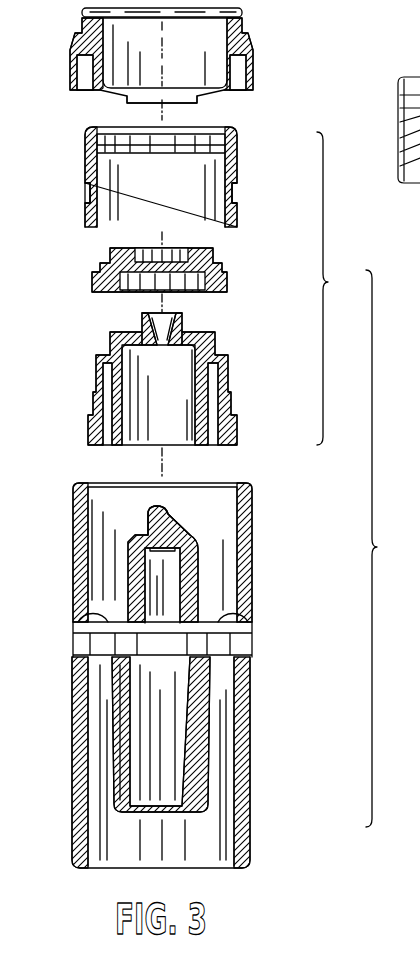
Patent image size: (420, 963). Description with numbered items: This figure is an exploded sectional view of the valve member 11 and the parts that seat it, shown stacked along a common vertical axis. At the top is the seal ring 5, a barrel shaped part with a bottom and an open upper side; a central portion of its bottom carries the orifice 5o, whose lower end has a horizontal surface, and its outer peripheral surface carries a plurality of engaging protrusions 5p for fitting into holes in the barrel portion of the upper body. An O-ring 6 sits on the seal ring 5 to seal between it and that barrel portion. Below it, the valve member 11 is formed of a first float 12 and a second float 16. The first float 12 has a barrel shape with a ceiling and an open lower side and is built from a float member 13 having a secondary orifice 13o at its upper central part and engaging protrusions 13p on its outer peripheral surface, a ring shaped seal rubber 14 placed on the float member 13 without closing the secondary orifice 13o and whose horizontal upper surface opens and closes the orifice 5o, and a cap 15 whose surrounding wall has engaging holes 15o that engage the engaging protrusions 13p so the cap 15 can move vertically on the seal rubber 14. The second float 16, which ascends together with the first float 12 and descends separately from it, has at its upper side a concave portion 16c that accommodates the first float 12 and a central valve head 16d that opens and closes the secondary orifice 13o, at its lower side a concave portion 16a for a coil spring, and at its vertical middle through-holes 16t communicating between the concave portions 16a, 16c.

The seal ring 5 is at (253, 46).
The engaging protrusions 5p is at (72, 70).
The orifice 5o is at (118, 100).
The O-ring 6 is at (244, 12).
The valve member 11 is at (386, 548).
The first float 12 is at (339, 288).
The float member 13 is at (236, 428).
The secondary orifice 13o is at (188, 313).
The engaging protrusions 13p is at (92, 384).
The seal rubber 14 is at (228, 270).
The cap 15 is at (238, 150).
The engaging holes 15o is at (86, 192).
The second float 16 is at (236, 716).
The concave portion 16a is at (222, 766).
The concave portion 16c is at (222, 594).
The valve head 16d is at (170, 512).
The through-holes 16t is at (92, 614).